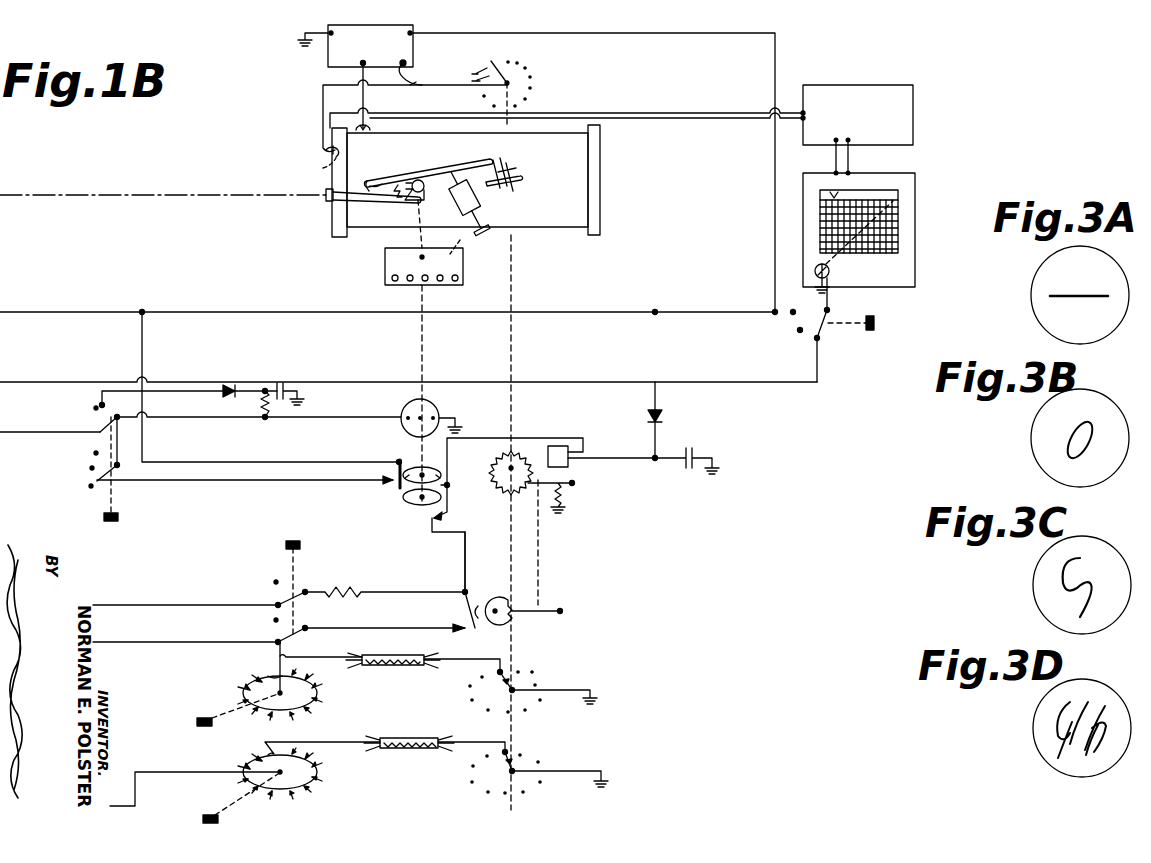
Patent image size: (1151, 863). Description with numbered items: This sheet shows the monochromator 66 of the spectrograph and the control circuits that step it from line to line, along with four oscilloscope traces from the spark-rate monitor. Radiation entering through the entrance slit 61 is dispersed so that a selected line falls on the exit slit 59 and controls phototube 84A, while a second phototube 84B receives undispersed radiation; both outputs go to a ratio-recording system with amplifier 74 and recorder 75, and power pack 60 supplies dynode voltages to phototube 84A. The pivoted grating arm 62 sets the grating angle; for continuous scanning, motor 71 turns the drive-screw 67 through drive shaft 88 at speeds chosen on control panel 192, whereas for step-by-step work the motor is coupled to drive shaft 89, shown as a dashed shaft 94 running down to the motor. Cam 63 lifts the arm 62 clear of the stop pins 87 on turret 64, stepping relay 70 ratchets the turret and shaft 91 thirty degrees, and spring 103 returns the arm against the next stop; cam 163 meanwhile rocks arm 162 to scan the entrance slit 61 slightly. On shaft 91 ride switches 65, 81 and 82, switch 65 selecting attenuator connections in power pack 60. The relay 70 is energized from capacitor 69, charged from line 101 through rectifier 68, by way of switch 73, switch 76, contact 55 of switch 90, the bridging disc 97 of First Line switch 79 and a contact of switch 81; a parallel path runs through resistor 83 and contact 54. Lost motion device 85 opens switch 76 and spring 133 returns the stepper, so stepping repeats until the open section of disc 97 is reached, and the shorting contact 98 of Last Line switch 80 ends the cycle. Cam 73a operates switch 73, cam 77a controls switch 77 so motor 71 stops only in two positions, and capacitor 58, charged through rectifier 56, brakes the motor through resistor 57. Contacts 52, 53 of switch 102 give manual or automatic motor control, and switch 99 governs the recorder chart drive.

The contact of switch 102 52 is at (104, 426).
The contact of switch 102 53 is at (118, 470).
The contact of switch 90 54 is at (286, 586).
The contact of switch 90 55 is at (298, 634).
The rectifier 56 is at (229, 395).
The resistor 57 is at (258, 412).
The capacitor 58 is at (286, 384).
The exit slit 59 is at (323, 170).
The power pack 60 is at (360, 55).
The entrance slit 61 is at (326, 198).
The grating arm 62 is at (440, 170).
The cam 63 is at (414, 182).
The turret 64 is at (522, 178).
The switch 65 is at (517, 91).
The monochromator 66 is at (466, 196).
The drive-screw 67 is at (470, 166).
The rectifier 68 is at (664, 418).
The capacitor 69 is at (688, 472).
The stepping relay 70 is at (515, 452).
The motor 71 is at (436, 407).
The switch 73 is at (450, 514).
The operating cam 73a is at (418, 506).
The amplifier 74 is at (858, 130).
The recorder 75 is at (915, 175).
The switch 76 is at (472, 600).
The switch 77 is at (396, 483).
The cam 77a is at (408, 466).
The First Line switch 79 is at (229, 707).
The Last Line switch 80 is at (230, 798).
The switch 81 is at (471, 682).
The switch 82 is at (486, 764).
The current-limiting resistor 83 is at (385, 577).
The phototube 84A is at (326, 152).
The phototube 84B is at (372, 126).
The lost motion device 85 is at (508, 622).
The stop pins 87 is at (505, 160).
The drive shaft 88 is at (462, 257).
The drive shaft 89 is at (422, 254).
The switch 90 is at (277, 588).
The turret shaft 91 is at (515, 357).
The shaft 94 is at (420, 323).
The bridging contact disc 97 is at (317, 690).
The shorting contact 98 is at (317, 780).
The switch 99 is at (853, 330).
The line 101 is at (38, 312).
The switch 102 is at (119, 531).
The spring 103 is at (386, 180).
The spring 133 is at (566, 496).
The arm 162 is at (375, 198).
The cam 163 is at (422, 200).
The control panel 192 is at (388, 268).